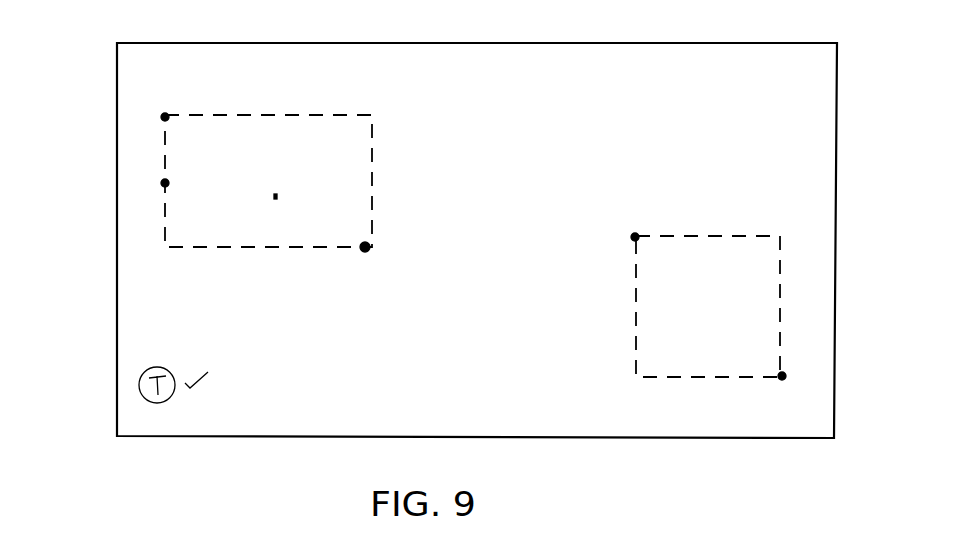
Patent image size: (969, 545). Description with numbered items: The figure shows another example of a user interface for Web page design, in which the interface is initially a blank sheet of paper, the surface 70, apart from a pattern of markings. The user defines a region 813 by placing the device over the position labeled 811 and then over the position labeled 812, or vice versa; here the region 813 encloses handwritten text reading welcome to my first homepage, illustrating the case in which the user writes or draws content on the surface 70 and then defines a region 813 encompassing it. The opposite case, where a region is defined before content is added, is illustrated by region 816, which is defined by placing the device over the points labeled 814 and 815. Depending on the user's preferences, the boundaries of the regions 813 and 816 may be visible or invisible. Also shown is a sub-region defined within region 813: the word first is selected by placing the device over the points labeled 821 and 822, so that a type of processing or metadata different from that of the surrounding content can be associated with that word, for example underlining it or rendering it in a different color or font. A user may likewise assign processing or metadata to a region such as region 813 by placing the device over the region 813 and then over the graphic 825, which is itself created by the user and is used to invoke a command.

The surface 70 is at (806, 82).
The position 811 is at (170, 110).
The position 812 is at (377, 262).
The region 813 is at (343, 148).
The point 814 is at (633, 233).
The point 815 is at (785, 383).
The region 816 is at (723, 311).
The point 821 is at (163, 184).
The point 822 is at (279, 194).
The graphic 825 is at (143, 366).